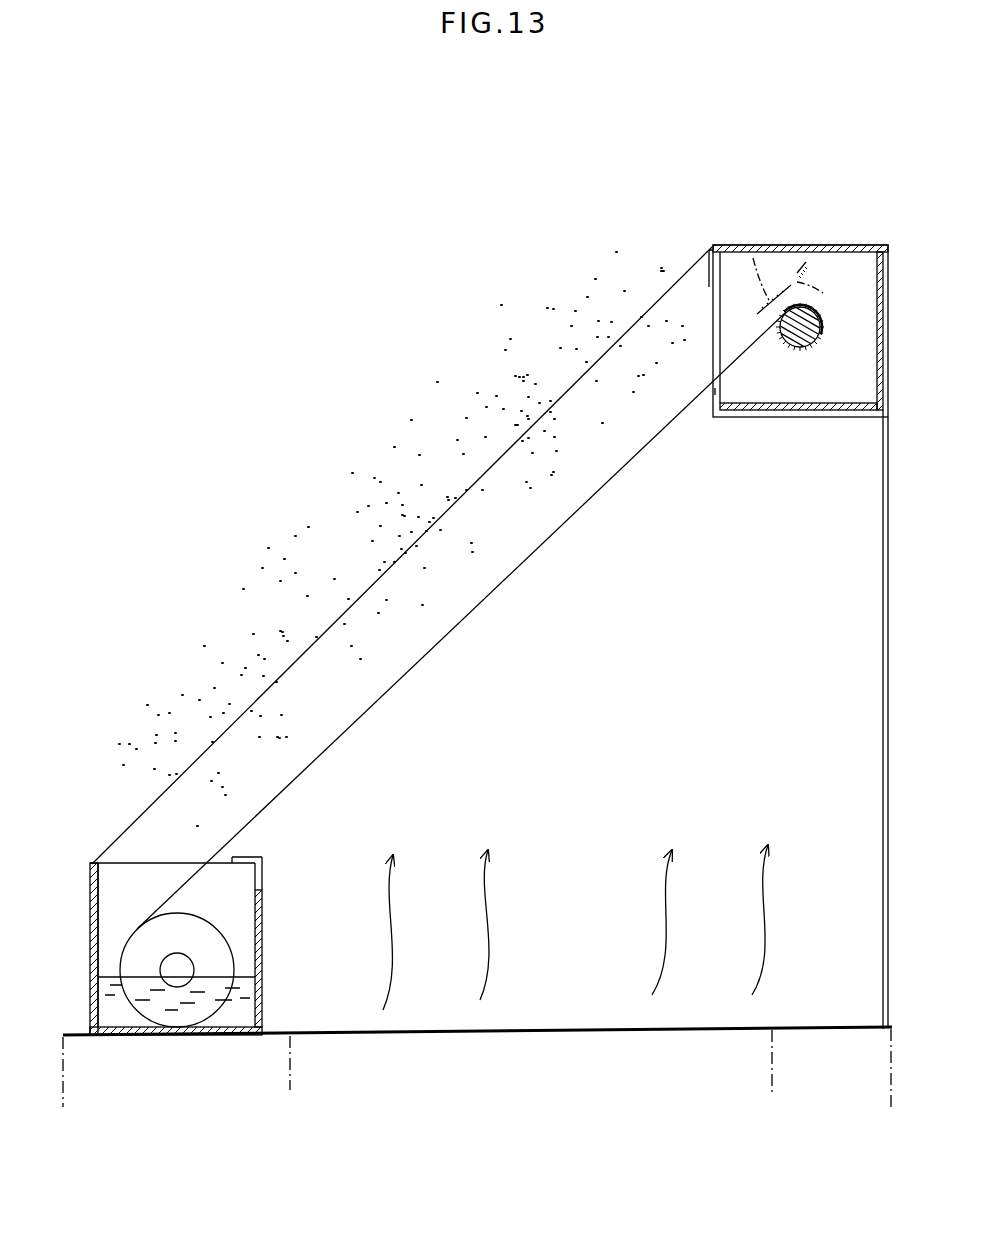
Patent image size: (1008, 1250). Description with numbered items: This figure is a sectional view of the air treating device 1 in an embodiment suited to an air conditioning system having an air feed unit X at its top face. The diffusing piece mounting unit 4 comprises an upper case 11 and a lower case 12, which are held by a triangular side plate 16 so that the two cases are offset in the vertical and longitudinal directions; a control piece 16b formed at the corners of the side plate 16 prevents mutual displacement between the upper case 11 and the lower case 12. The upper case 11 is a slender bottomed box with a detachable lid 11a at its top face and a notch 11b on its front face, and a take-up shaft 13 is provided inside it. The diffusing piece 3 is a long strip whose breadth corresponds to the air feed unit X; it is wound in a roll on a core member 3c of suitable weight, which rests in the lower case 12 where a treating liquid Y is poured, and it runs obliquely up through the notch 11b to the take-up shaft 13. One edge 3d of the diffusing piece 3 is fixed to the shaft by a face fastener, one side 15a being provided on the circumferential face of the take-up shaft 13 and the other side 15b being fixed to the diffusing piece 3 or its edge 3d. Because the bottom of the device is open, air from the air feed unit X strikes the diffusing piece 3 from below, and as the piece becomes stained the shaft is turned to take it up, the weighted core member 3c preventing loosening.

The air treating device 1 is at (326, 428).
The diffusing piece 3 is at (396, 676).
The core member 3c is at (182, 965).
The edge of the diffusing piece 3d is at (800, 308).
The diffusing piece mounting unit 4 is at (90, 902).
The upper case 11 is at (858, 243).
The detachable lid 11a is at (792, 244).
The notch 11b is at (714, 322).
The lower case 12 is at (121, 860).
The take-up shaft 13 is at (799, 351).
The one side of face fastener 15a is at (813, 341).
The other side of face fastener 15b is at (818, 288).
The side plate 16 is at (471, 484).
The control piece 16b is at (710, 250).
The air feed unit X is at (560, 1030).
The treating liquid Y is at (110, 982).